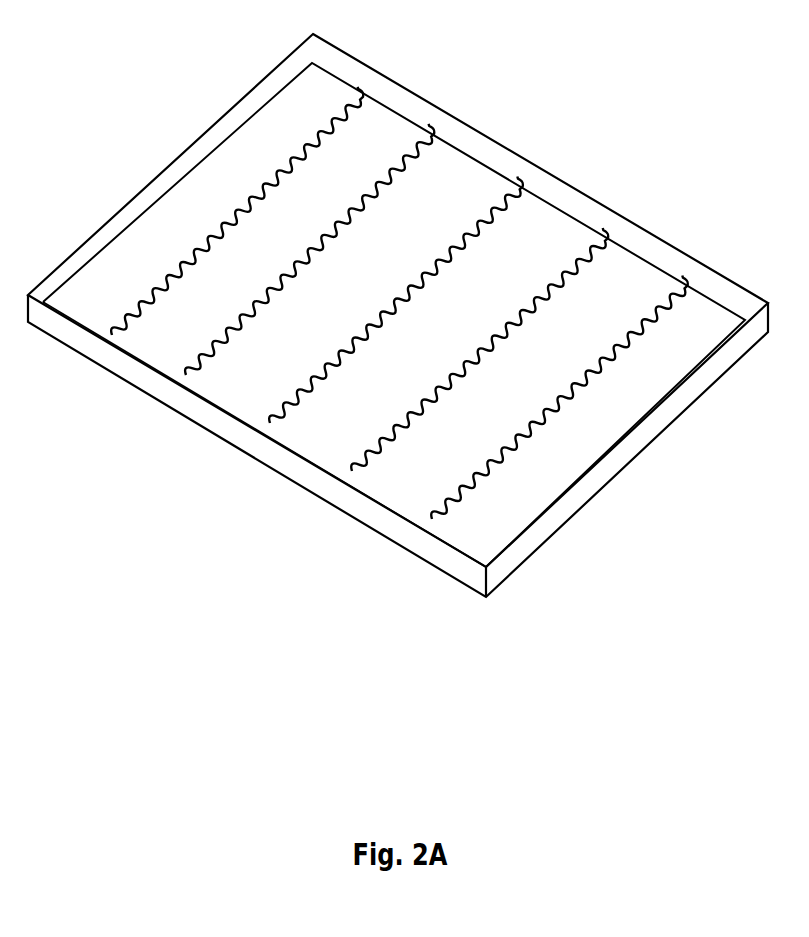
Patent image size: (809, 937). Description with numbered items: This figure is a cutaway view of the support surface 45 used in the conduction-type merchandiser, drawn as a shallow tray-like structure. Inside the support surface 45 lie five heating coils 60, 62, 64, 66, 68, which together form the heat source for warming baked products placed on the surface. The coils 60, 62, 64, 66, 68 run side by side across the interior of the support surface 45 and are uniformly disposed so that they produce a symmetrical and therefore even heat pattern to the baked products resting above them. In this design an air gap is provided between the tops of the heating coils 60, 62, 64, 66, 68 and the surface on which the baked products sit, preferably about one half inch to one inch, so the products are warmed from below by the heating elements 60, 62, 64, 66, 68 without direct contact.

The support surface 45 is at (210, 128).
The heating coil 60 is at (437, 517).
The heating coil 62 is at (114, 334).
The heating coil 64 is at (188, 374).
The heating coil 66 is at (272, 422).
The heating coil 68 is at (355, 470).